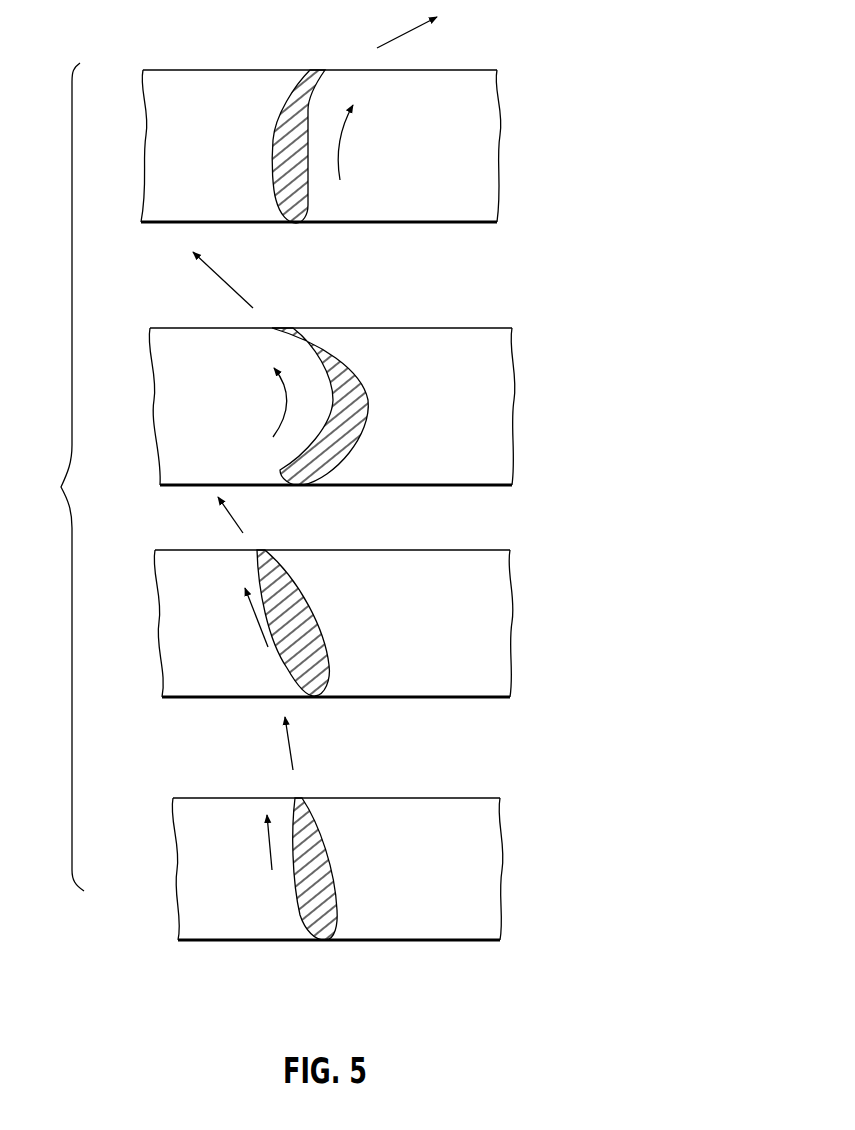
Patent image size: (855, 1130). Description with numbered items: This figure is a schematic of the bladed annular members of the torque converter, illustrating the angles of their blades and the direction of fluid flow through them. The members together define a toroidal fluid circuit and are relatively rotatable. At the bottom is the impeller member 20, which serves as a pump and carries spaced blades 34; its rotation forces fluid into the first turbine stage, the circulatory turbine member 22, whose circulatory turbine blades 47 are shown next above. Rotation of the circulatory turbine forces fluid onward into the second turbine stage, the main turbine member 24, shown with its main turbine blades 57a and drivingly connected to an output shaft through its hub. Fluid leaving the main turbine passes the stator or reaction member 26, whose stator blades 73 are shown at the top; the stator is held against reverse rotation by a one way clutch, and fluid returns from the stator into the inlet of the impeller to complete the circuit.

The impeller member 20 is at (416, 933).
The circulatory turbine member 22 is at (434, 690).
The main turbine member 24 is at (436, 478).
The reaction member 26 is at (450, 218).
The impeller blades 34 is at (317, 826).
The circulatory turbine blades 47 is at (293, 590).
The main turbine blades 57a is at (338, 350).
The stator blades 73 is at (273, 153).